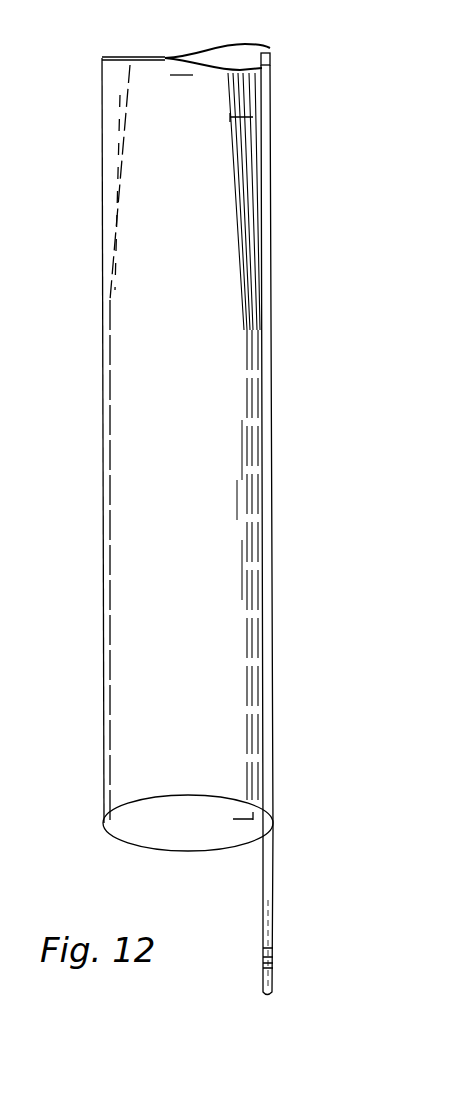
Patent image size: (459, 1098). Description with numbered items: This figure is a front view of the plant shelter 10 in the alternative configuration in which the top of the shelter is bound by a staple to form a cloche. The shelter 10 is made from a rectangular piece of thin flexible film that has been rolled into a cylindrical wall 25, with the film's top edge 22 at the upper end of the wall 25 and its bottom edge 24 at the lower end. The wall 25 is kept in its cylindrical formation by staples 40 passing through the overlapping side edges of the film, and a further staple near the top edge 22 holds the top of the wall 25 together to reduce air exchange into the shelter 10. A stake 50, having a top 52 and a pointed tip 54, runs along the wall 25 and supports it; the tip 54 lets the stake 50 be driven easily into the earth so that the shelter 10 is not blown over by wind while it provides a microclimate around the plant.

The plant shelter 10 is at (225, 498).
The top edge 22 is at (153, 57).
The bottom edge 24 is at (172, 851).
The cylindrical wall 25 is at (102, 542).
The staples 40 is at (182, 74).
The stake 50 is at (265, 539).
The top 52 is at (270, 58).
The tip 54 is at (268, 973).